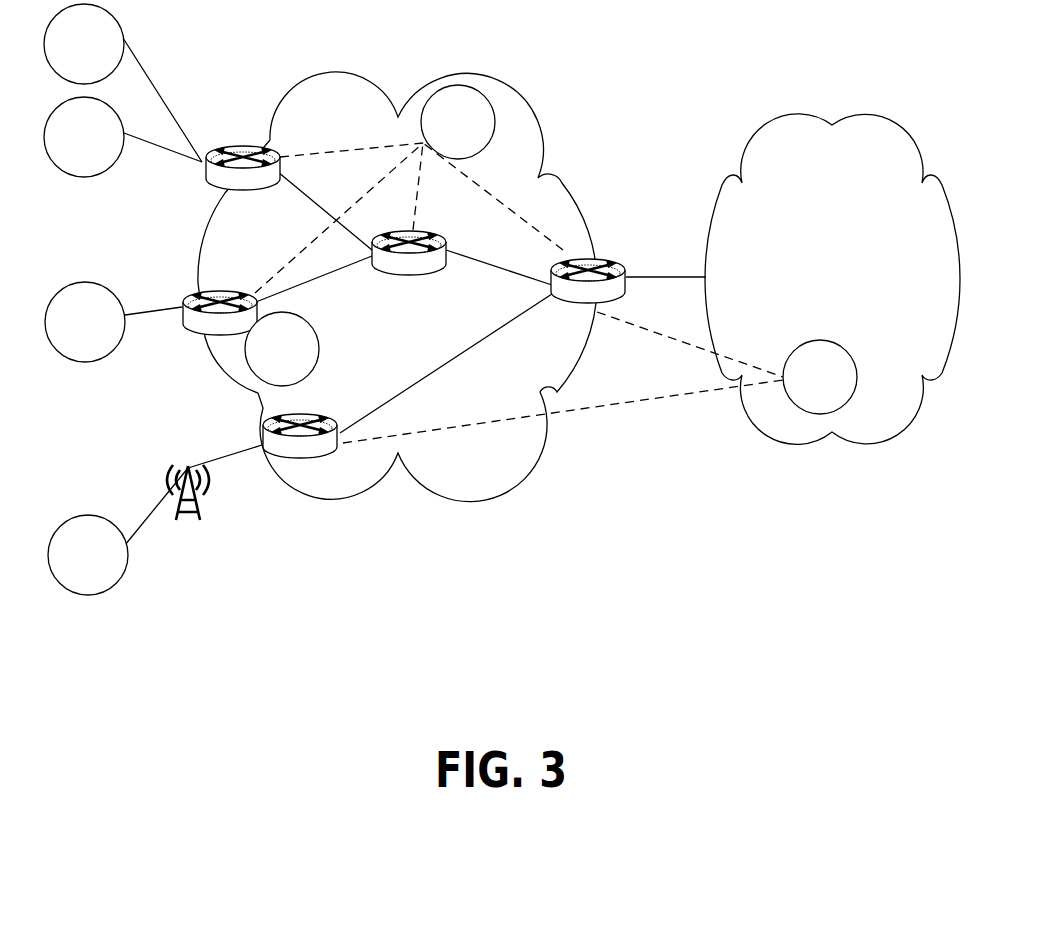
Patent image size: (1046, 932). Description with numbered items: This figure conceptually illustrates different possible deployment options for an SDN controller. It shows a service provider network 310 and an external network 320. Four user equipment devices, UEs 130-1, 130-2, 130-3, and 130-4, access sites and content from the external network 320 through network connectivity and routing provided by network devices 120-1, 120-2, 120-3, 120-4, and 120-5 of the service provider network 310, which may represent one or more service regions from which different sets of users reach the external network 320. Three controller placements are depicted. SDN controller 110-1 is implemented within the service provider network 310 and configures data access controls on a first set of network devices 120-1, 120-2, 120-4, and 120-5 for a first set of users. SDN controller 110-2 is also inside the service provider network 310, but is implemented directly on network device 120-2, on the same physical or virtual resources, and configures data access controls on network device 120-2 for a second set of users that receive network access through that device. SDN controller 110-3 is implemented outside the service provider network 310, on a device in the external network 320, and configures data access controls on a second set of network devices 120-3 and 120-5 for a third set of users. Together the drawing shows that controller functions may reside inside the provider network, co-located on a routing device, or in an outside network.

The SDN controller 110-1 is at (431, 131).
The SDN controller 110-2 is at (255, 358).
The SDN controller 110-3 is at (793, 386).
The network device 120-1 is at (242, 153).
The network device 120-2 is at (208, 325).
The network device 120-3 is at (297, 448).
The network device 120-4 is at (408, 263).
The network device 120-5 is at (605, 258).
The UE 130-1 is at (57, 53).
The UE 130-2 is at (57, 146).
The UE 130-3 is at (58, 331).
The UE 130-4 is at (61, 564).
The service provider network 310 is at (473, 498).
The external network 320 is at (875, 473).